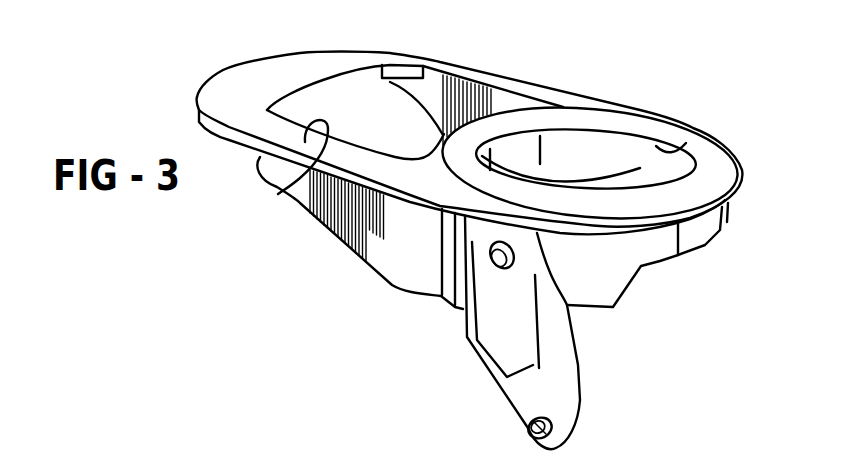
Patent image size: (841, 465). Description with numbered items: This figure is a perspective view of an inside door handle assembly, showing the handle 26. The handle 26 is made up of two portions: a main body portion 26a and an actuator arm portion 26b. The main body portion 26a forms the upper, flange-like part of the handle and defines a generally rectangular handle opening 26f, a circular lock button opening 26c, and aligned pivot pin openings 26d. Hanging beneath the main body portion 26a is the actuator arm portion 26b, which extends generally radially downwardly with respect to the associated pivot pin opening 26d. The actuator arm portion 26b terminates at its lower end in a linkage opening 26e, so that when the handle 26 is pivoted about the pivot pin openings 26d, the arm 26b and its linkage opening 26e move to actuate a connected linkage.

The handle 26 is at (333, 247).
The main body portion 26a is at (515, 75).
The actuator arm portion 26b is at (465, 347).
The circular lock button opening 26c is at (680, 147).
The pivot pin openings 26d is at (490, 252).
The linkage opening 26e is at (527, 433).
The handle opening 26f is at (318, 150).